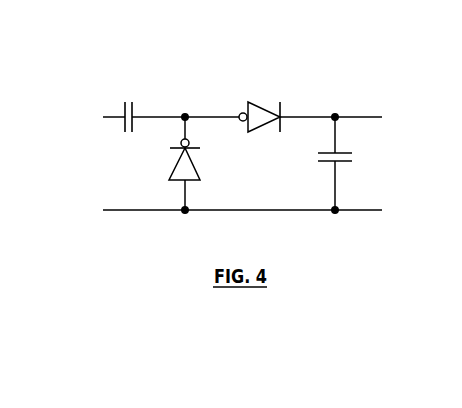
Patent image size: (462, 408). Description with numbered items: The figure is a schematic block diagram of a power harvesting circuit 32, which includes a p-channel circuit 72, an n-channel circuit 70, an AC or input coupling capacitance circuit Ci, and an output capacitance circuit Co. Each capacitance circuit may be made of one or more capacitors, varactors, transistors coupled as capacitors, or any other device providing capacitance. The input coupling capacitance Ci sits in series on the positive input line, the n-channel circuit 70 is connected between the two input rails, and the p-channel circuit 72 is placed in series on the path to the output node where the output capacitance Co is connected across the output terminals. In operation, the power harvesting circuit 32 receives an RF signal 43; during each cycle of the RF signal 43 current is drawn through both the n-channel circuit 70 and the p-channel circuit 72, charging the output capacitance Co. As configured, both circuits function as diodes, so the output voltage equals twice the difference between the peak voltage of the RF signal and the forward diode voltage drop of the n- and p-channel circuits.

The power harvesting circuit 32 is at (308, 322).
The RF signal 43 is at (128, 178).
The n-channel circuit 70 is at (286, 194).
The p-channel circuit 72 is at (327, 96).